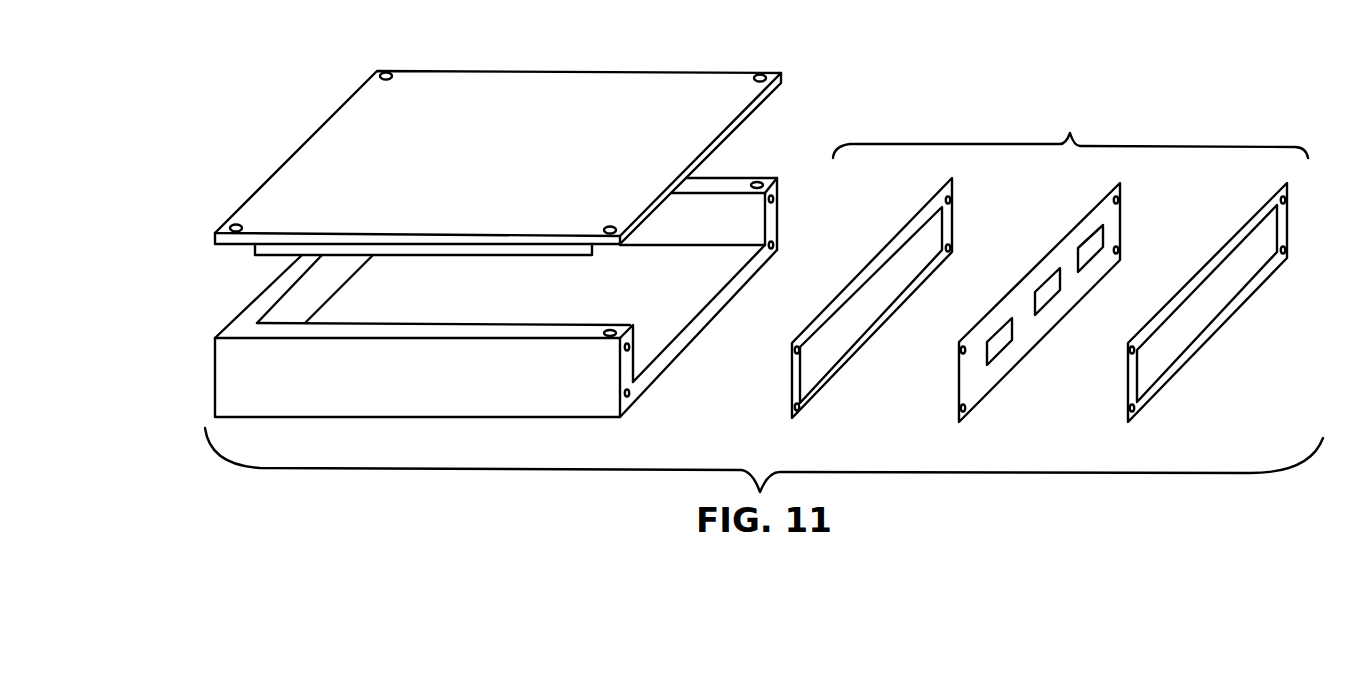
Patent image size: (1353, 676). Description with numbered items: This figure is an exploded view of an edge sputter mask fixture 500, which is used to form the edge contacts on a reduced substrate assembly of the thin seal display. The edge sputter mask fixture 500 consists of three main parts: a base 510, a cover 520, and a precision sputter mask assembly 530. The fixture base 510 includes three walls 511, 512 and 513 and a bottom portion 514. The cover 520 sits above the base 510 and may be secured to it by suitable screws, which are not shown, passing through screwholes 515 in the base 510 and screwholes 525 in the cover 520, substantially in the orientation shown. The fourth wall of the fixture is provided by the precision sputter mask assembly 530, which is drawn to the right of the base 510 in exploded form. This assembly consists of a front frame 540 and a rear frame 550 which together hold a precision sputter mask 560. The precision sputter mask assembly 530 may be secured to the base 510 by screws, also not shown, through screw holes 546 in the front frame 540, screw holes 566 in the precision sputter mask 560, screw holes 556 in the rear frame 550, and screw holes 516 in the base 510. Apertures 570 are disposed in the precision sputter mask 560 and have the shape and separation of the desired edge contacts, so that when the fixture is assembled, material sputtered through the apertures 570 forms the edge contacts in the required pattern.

The edge sputter mask fixture 500 is at (936, 78).
The base 510 is at (390, 417).
The wall 511 is at (415, 332).
The wall 512 is at (252, 312).
The wall 513 is at (726, 178).
The bottom portion 514 is at (745, 270).
The screwholes 515 is at (758, 182).
The screw holes 516 is at (774, 199).
The cover 520 is at (306, 142).
The screwholes 525 is at (386, 73).
The precision sputter mask assembly 530 is at (1070, 131).
The front frame 540 is at (792, 378).
The screw holes 546 is at (948, 199).
The rear frame 550 is at (1128, 385).
The screw holes 556 is at (1283, 199).
The precision sputter mask 560 is at (959, 387).
The screw holes 566 is at (1116, 200).
The apertures 570 is at (1085, 245).